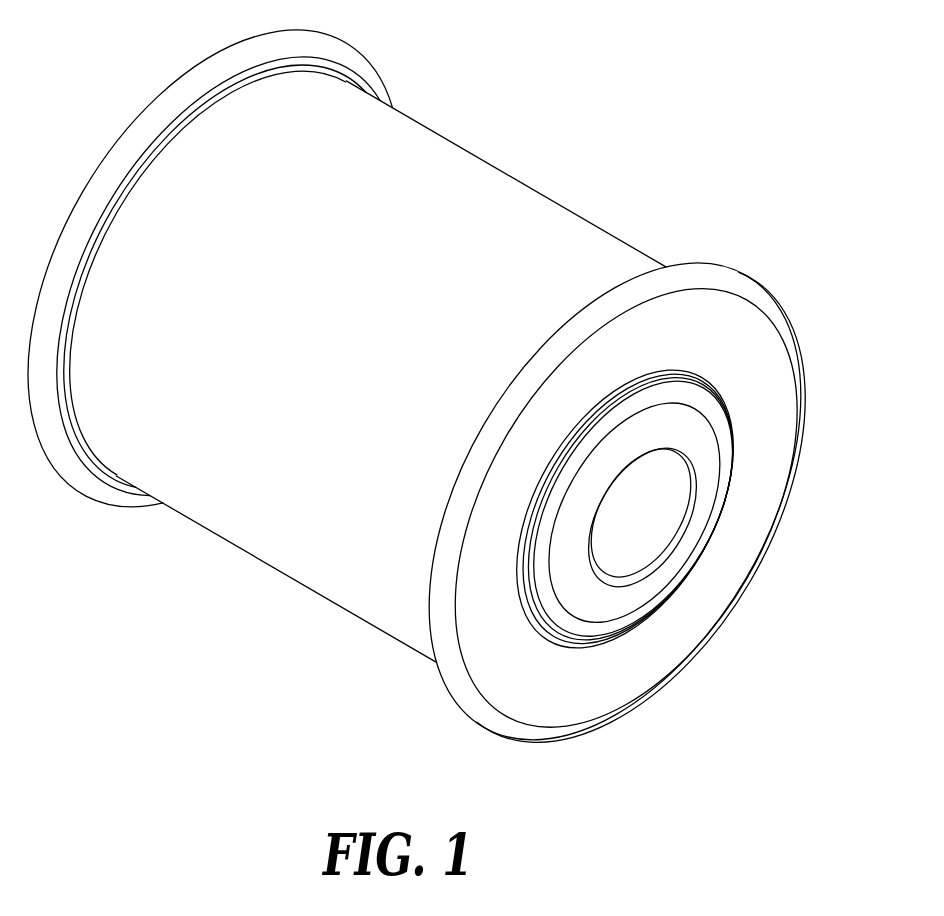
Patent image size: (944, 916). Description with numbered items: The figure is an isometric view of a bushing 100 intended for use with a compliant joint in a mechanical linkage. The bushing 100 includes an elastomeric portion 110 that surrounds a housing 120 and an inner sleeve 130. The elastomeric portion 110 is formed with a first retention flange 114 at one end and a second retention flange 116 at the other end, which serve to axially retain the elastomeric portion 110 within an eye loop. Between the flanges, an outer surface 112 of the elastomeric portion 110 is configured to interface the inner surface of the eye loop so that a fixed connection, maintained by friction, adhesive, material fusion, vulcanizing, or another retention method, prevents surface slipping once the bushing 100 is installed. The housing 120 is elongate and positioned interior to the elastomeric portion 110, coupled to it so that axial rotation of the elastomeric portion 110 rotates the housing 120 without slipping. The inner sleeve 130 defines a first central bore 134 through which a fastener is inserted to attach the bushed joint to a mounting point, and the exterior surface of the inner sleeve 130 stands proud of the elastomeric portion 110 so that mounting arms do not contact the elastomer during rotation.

The bushing 100 is at (453, 414).
The elastomeric portion 110 is at (738, 350).
The outer surface 112 is at (567, 210).
The first retention flange 114 is at (160, 97).
The second retention flange 116 is at (747, 283).
The housing 120 is at (722, 402).
The inner sleeve 130 is at (713, 497).
The first central bore 134 is at (630, 538).